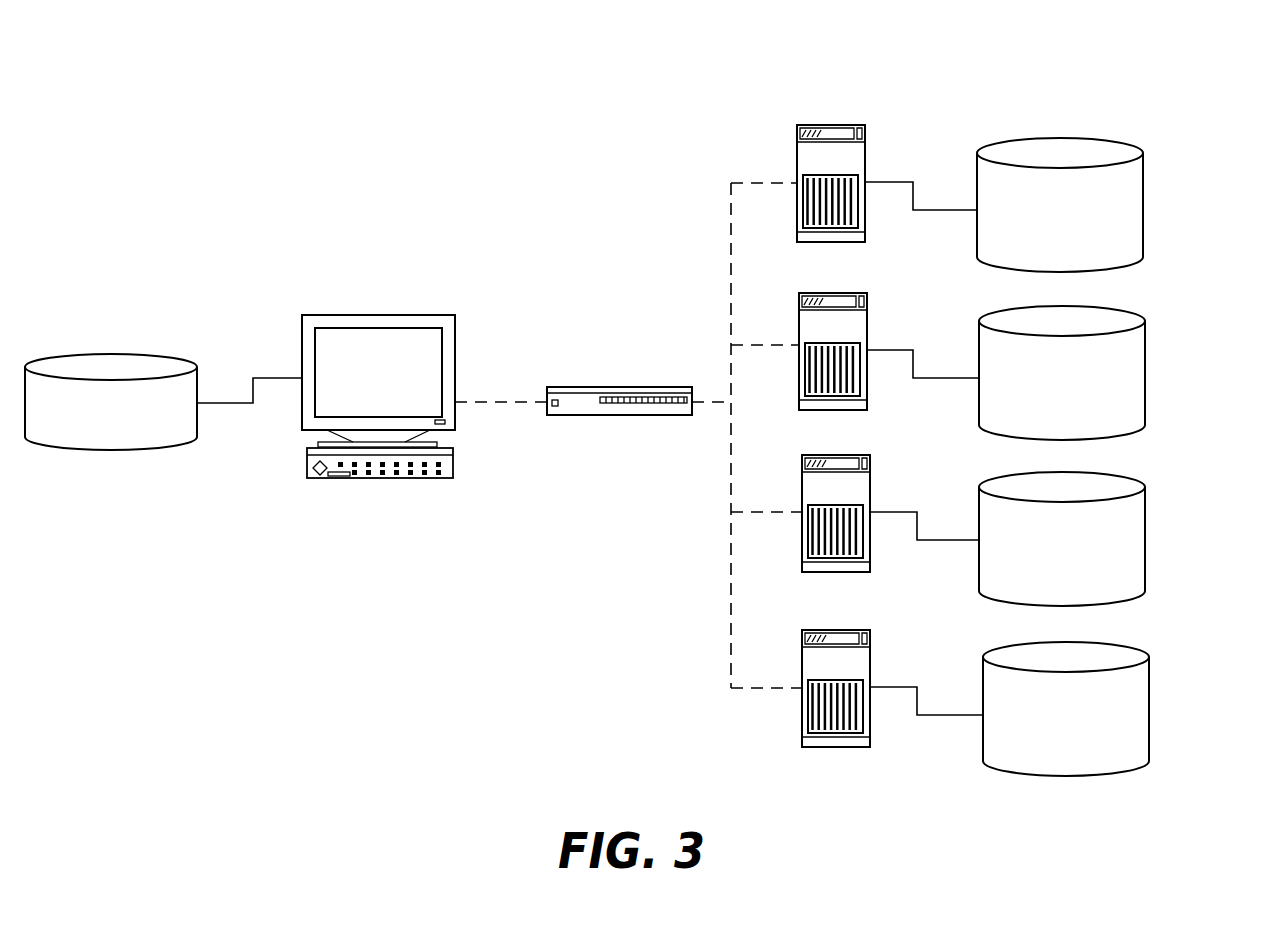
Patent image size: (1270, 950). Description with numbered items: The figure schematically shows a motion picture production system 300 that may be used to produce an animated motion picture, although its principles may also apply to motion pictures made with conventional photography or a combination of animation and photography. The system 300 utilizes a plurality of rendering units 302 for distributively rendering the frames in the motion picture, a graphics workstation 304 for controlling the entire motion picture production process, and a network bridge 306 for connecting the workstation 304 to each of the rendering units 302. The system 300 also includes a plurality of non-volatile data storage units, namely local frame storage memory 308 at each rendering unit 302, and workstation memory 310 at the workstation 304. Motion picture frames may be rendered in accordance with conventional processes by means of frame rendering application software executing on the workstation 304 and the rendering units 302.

The motion picture production system 300 is at (790, 50).
The rendering units 302 is at (797, 325).
The graphics workstation 304 is at (372, 315).
The network bridge 306 is at (577, 387).
The local frame storage memory 308 is at (1145, 712).
The workstation memory 310 is at (98, 358).